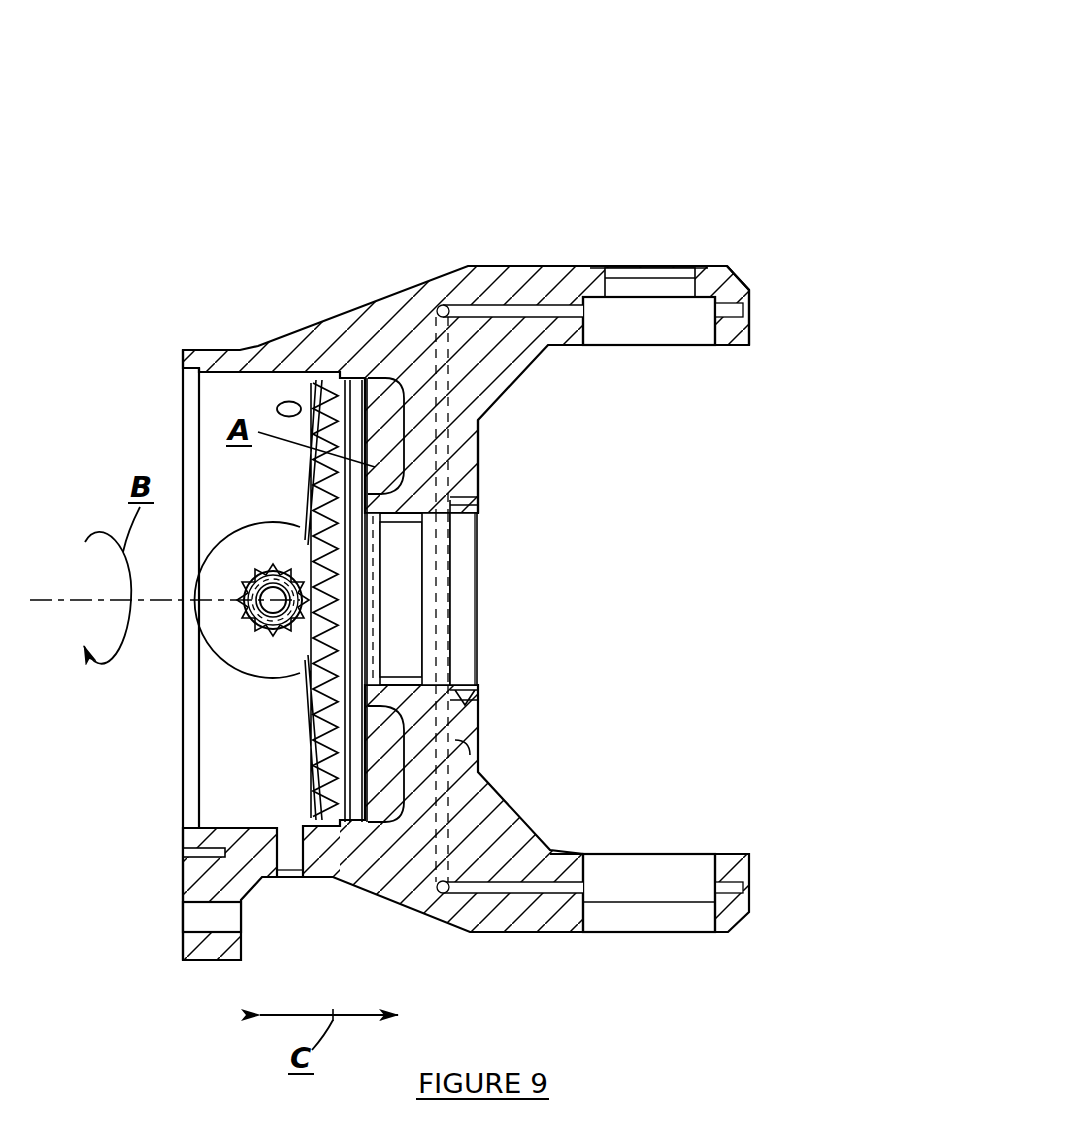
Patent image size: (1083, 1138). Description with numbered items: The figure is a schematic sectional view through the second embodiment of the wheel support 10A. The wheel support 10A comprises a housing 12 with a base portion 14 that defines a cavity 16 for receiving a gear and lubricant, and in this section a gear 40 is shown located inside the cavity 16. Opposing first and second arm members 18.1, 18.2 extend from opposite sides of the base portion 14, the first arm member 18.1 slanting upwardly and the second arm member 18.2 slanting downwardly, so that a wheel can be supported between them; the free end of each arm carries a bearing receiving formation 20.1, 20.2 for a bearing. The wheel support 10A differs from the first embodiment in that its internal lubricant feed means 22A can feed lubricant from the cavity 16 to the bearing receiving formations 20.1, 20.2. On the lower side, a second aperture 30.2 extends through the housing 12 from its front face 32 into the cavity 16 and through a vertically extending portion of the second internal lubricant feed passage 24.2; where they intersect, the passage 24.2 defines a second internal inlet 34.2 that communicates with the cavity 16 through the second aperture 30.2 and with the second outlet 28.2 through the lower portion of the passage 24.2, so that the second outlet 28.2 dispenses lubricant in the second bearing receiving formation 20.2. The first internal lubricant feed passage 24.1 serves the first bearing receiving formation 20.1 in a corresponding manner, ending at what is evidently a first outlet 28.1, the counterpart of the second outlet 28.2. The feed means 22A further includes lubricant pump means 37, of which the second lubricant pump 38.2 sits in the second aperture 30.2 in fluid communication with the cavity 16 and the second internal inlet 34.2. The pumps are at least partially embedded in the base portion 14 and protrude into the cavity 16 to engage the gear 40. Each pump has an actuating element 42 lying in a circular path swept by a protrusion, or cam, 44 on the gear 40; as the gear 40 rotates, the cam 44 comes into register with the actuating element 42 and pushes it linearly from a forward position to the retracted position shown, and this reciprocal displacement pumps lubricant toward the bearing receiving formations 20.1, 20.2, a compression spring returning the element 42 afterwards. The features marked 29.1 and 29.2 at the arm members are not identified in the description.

The wheel support 10A is at (697, 118).
The housing 12 is at (214, 309).
The base portion 14 is at (392, 900).
The cavity 16 is at (275, 490).
The first arm member 18.1 is at (556, 264).
The second arm member 18.2 is at (742, 928).
The first bearing receiving formation 20.1 is at (672, 342).
The second bearing receiving formation 20.2 is at (685, 856).
The internal lubricant feed means 22A is at (490, 440).
The first internal lubricant feed passage 24.1 is at (524, 303).
The second internal lubricant feed passage 24.2 is at (510, 892).
The first shoulder 28.1 is at (588, 312).
The second outlet 28.2 is at (590, 885).
The first surface 29.1 is at (705, 519).
The second surface 29.2 is at (774, 241).
The second aperture 30.2 is at (480, 681).
The front face 32 is at (481, 478).
The second internal inlet 34.2 is at (452, 763).
The lubricant pump means 37 is at (514, 611).
The second lubricant pump 38.2 is at (462, 726).
The gear 40 is at (320, 690).
The actuating element 42 is at (358, 788).
The protrusion 44 is at (372, 737).